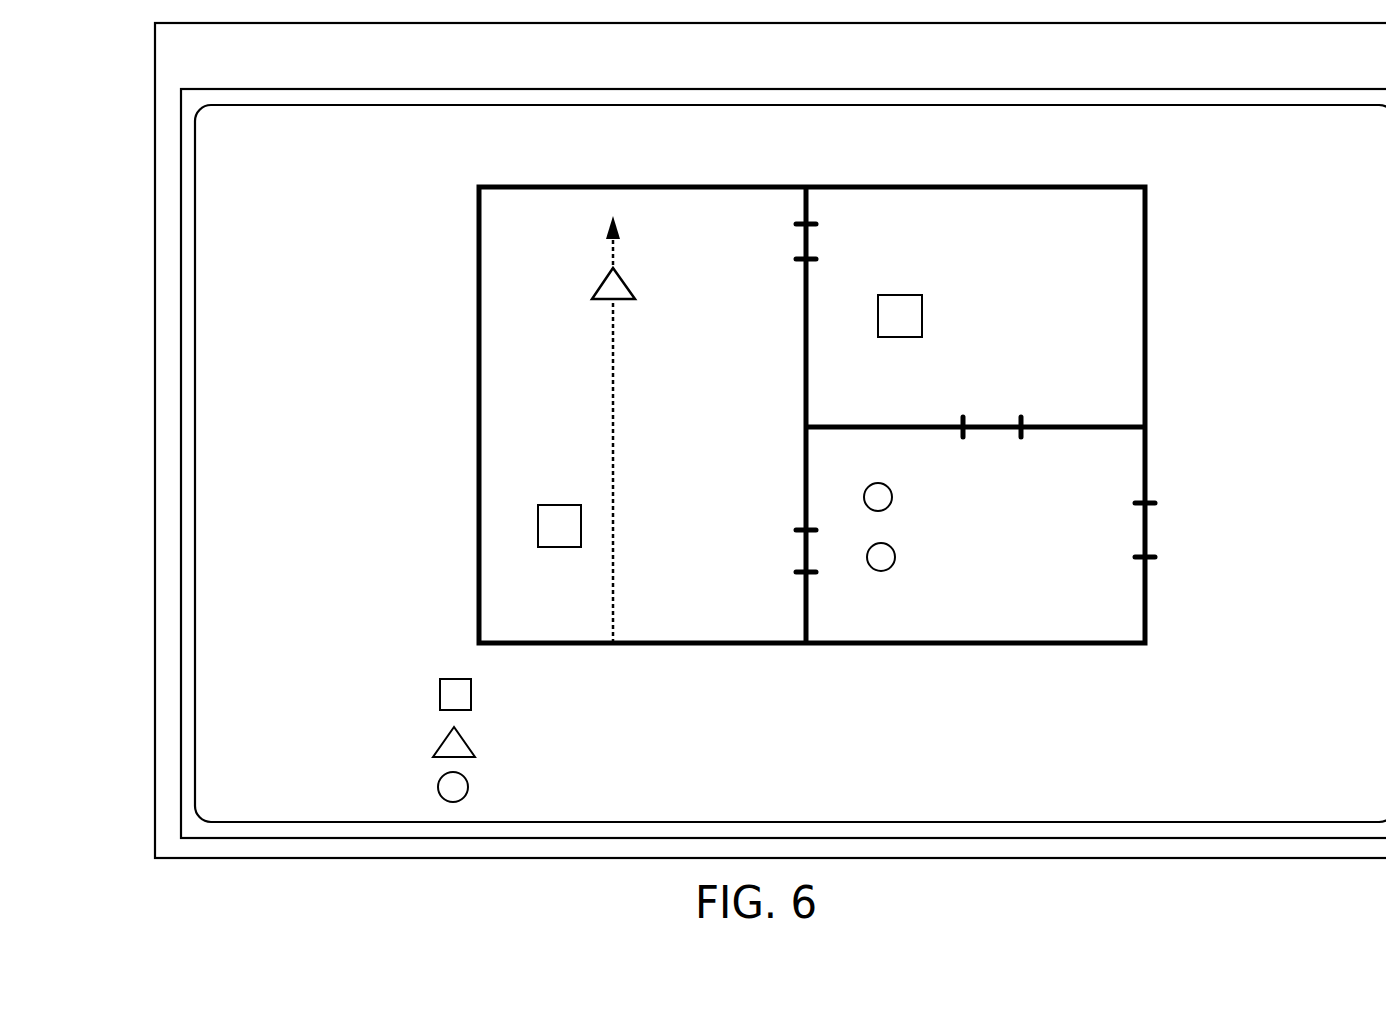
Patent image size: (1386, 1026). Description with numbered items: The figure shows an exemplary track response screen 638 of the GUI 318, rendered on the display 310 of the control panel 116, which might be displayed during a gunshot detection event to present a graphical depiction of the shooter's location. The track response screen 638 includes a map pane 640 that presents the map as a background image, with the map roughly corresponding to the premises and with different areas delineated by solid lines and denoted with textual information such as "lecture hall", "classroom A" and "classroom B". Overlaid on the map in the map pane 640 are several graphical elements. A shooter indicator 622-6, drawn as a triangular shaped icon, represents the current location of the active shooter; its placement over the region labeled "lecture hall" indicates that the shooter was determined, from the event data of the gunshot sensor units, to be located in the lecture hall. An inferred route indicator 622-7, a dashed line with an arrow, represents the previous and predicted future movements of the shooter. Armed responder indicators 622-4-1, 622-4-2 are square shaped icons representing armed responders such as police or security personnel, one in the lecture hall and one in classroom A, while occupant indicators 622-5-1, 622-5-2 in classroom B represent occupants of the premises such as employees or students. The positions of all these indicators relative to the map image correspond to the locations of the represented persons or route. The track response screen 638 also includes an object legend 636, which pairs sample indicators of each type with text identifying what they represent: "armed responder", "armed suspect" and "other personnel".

The control panel 116 is at (770, 440).
The display 310 is at (181, 164).
The GUI 318 is at (180, 297).
The track response screen 638 is at (225, 431).
The map pane 640 is at (462, 299).
The object legend 636 is at (428, 675).
The shooter indicator 622-6 is at (622, 300).
The inferred route indicator 622-7 is at (613, 375).
The armed responder indicator 622-4-1 is at (562, 505).
The armed responder indicator 622-4-2 is at (922, 310).
The occupant indicator 622-5-1 is at (892, 497).
The occupant indicator 622-5-2 is at (895, 558).